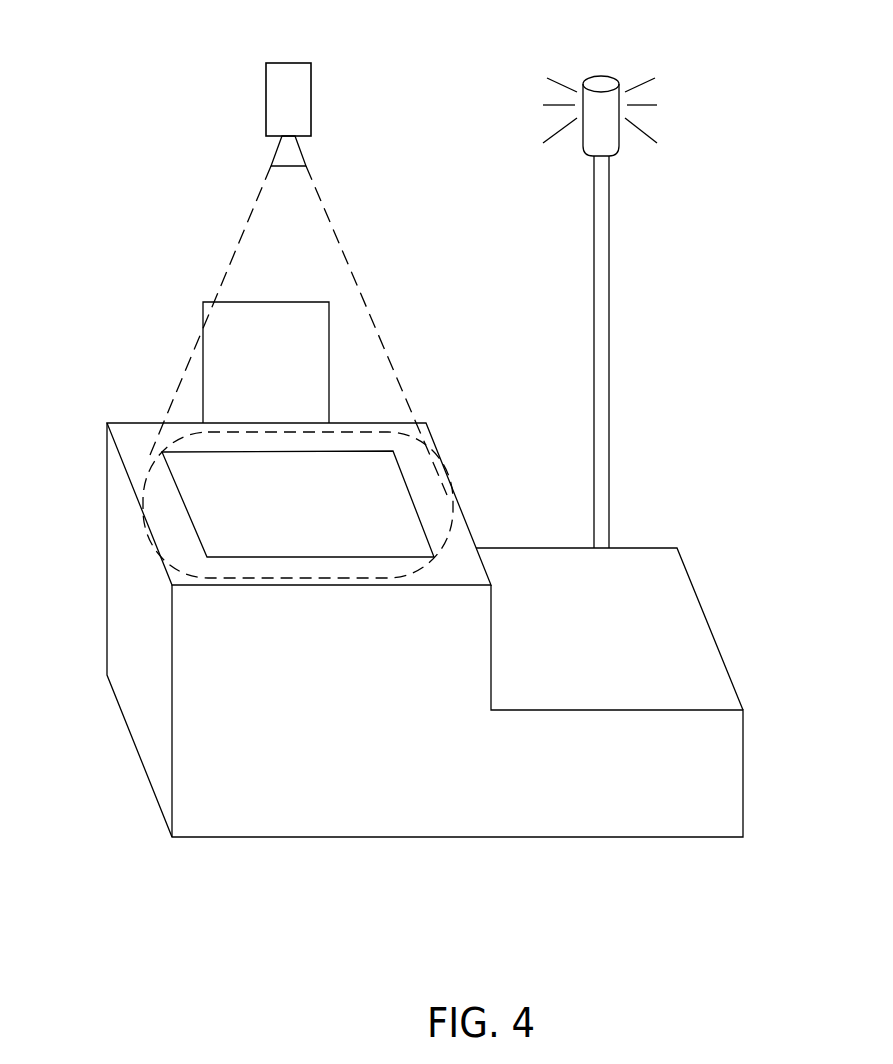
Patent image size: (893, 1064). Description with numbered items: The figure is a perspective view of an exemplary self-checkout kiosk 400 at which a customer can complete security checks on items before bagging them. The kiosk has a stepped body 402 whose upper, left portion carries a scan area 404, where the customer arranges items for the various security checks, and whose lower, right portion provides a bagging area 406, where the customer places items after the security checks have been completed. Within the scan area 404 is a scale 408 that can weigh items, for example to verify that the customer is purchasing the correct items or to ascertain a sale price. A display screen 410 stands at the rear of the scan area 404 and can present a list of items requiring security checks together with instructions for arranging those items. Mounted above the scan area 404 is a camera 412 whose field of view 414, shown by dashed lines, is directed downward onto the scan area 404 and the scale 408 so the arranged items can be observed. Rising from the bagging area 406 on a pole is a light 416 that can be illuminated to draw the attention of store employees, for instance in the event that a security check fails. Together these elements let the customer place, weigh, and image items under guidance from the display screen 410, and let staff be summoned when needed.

The self-checkout kiosk 400 is at (645, 313).
The base housing 402 is at (353, 750).
The scan area 404 is at (149, 382).
The bagging area 406 is at (645, 522).
The scale 408 is at (311, 512).
The display screen 410 is at (282, 370).
The camera 412 is at (305, 78).
The field of view 414 is at (452, 526).
The light 416 is at (602, 82).